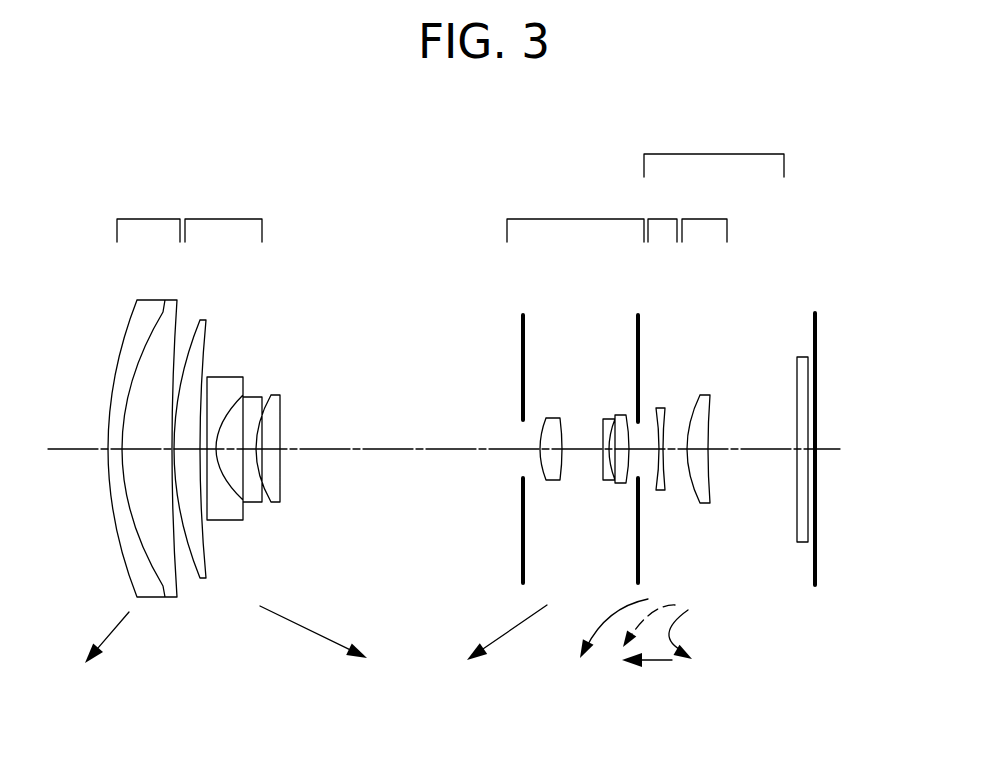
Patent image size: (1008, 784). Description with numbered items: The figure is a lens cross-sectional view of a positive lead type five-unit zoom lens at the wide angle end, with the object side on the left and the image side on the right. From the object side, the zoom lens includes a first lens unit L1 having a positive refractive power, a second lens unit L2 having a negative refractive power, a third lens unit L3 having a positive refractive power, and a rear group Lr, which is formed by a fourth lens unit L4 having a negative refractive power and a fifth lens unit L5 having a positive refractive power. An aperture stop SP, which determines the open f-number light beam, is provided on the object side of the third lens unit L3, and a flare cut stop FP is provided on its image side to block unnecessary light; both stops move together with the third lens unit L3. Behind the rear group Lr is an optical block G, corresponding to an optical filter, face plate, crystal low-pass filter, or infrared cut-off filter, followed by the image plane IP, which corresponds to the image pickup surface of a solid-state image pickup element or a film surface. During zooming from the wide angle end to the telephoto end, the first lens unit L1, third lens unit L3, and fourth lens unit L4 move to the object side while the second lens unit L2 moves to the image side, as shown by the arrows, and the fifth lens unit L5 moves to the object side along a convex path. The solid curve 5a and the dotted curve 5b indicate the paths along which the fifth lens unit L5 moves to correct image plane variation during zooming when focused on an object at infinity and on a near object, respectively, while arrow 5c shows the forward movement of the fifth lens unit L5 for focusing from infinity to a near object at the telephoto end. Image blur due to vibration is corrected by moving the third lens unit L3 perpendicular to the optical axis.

The first lens unit L1 is at (0, 0).
The second lens unit L2 is at (0, 0).
The third lens unit L3 is at (0, 0).
The fourth lens unit L4 is at (0, 0).
The fifth lens unit L5 is at (0, 0).
The rear group Lr is at (392, 251).
The aperture stop SP is at (518, 345).
The flare cut stop FP is at (640, 370).
The optical block G is at (802, 367).
The image plane IP is at (817, 403).
The solid curve 5a is at (680, 617).
The dotted curve 5b is at (650, 612).
The arrow 5c is at (660, 663).